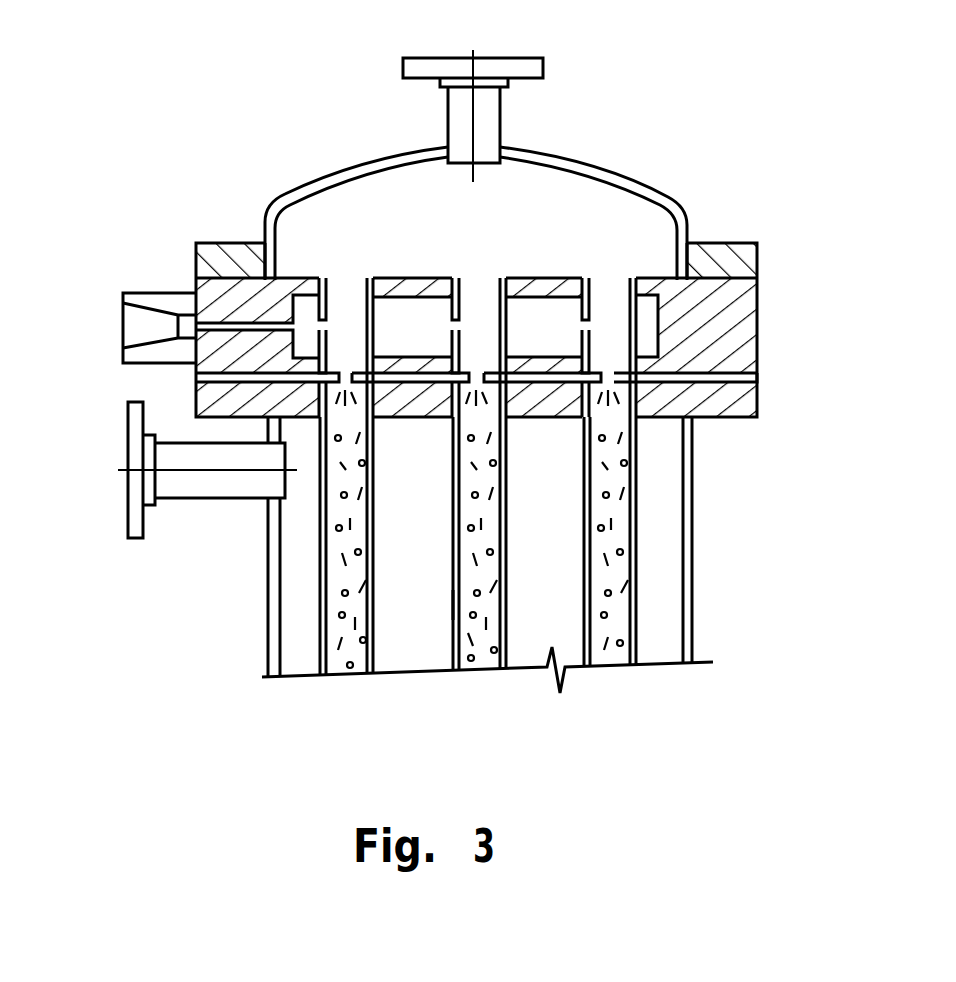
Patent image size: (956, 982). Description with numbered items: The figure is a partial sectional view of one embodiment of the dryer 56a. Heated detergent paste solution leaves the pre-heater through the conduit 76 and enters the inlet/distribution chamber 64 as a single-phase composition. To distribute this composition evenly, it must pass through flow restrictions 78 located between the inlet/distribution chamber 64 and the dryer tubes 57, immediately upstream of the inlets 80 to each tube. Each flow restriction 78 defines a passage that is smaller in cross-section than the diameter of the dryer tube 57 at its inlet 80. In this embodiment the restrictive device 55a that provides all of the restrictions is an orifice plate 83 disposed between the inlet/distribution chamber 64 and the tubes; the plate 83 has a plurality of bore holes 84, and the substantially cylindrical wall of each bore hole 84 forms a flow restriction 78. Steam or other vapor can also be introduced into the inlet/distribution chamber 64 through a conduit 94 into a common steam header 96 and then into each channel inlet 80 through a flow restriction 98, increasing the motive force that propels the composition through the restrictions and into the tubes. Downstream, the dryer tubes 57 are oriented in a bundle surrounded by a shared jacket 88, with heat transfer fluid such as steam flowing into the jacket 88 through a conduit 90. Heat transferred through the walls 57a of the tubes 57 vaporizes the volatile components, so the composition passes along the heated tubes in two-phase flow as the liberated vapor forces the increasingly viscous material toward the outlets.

The dryer 56a is at (196, 210).
The conduit 76 is at (485, 55).
The inlet/distribution chamber 64 is at (570, 173).
The flow restriction 98 is at (302, 327).
The flow restriction 78 is at (350, 372).
The bore hole 84 is at (343, 373).
The common steam header 96 is at (647, 338).
The orifice plate 83 is at (757, 342).
The restrictive device 55a is at (762, 377).
The conduit 94 is at (128, 358).
The inlet 80 is at (353, 384).
The conduit 90 is at (128, 482).
The jacket 88 is at (270, 547).
The dryer tube 57 is at (622, 527).
The wall 57a is at (460, 605).